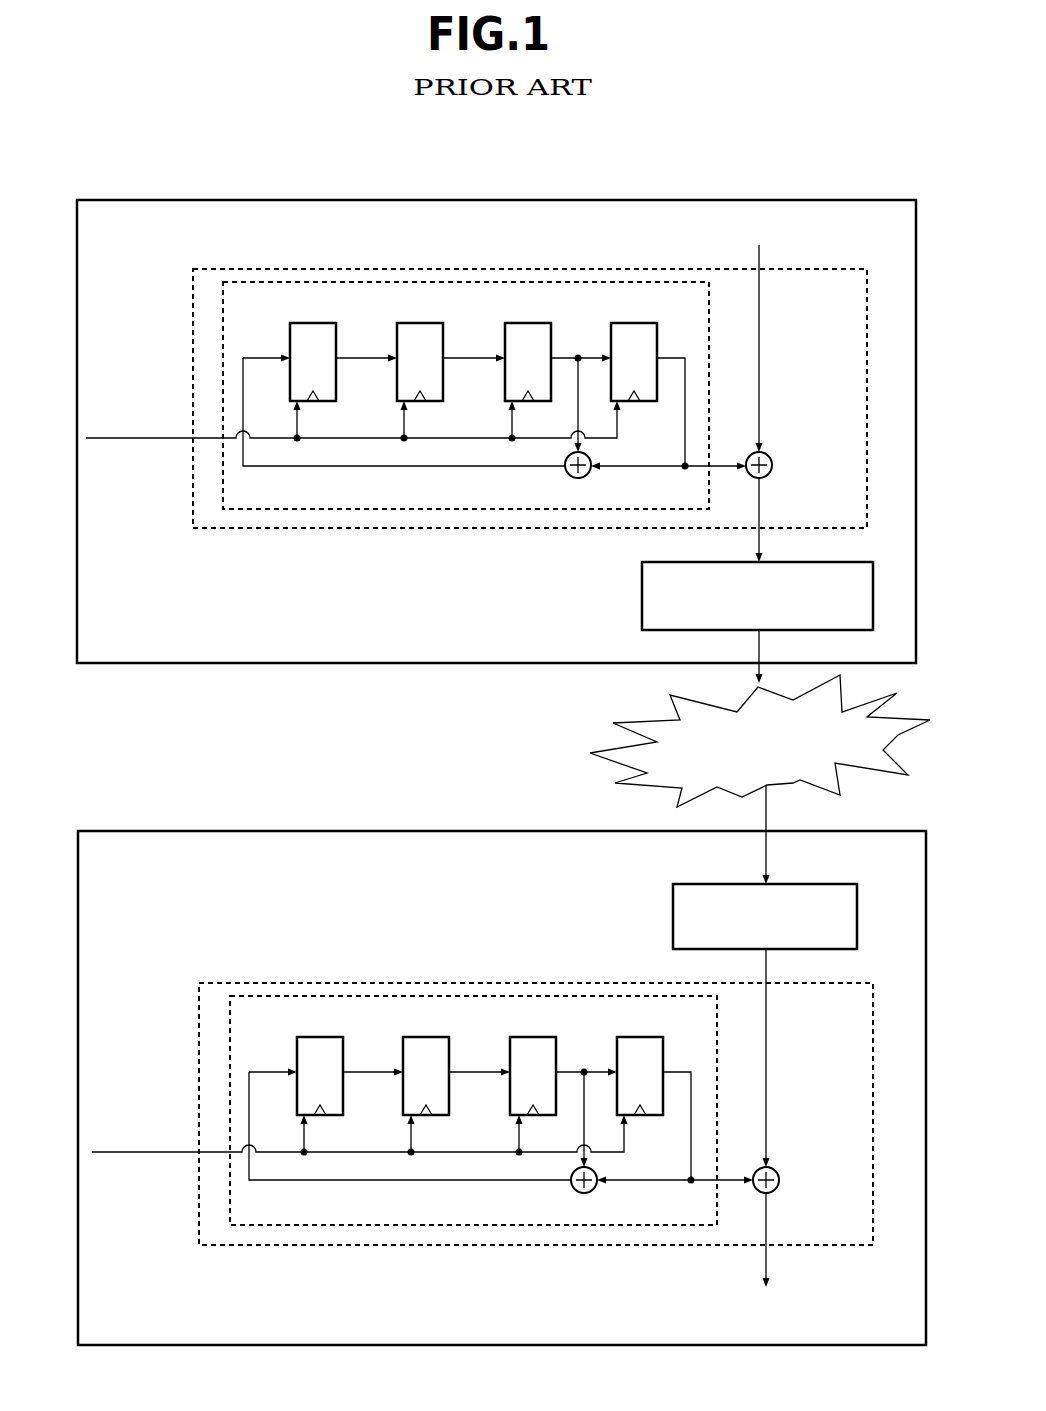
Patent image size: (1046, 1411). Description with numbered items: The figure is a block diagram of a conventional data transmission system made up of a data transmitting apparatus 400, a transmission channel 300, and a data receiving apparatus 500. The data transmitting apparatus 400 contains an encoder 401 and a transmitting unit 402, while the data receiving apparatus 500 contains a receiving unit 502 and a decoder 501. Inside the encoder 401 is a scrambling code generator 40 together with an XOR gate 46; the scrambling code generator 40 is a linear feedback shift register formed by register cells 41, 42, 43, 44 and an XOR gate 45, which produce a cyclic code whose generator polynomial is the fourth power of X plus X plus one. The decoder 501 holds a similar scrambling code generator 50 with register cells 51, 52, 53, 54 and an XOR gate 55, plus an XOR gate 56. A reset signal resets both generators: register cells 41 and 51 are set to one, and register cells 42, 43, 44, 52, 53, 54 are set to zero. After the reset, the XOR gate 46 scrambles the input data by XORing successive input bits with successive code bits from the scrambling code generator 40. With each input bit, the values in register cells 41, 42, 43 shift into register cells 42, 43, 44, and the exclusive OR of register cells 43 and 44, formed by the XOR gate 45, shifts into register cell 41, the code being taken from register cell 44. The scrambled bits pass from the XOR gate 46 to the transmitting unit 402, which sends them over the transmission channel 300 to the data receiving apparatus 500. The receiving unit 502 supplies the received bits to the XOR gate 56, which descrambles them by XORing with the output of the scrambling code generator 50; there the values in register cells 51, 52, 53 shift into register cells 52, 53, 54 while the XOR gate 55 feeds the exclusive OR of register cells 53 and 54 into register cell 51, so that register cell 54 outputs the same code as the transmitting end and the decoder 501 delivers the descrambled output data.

The data transmitting apparatus 400 is at (500, 200).
The encoder 401 is at (518, 268).
The scrambling code generator 40 is at (712, 370).
The register cell 41 is at (316, 323).
The register cell 42 is at (423, 323).
The register cell 43 is at (531, 323).
The register cell 44 is at (637, 323).
The XOR gate 45 is at (568, 475).
The XOR gate 46 is at (769, 455).
The transmitting unit 402 is at (642, 598).
The transmission channel 300 is at (600, 748).
The data receiving apparatus 500 is at (472, 830).
The receiving unit 502 is at (820, 884).
The decoder 501 is at (520, 983).
The scrambling code generator 50 is at (718, 1090).
The register cell 51 is at (323, 1037).
The register cell 52 is at (430, 1037).
The register cell 53 is at (537, 1037).
The register cell 54 is at (644, 1037).
The XOR gate 55 is at (575, 1190).
The XOR gate 56 is at (776, 1170).